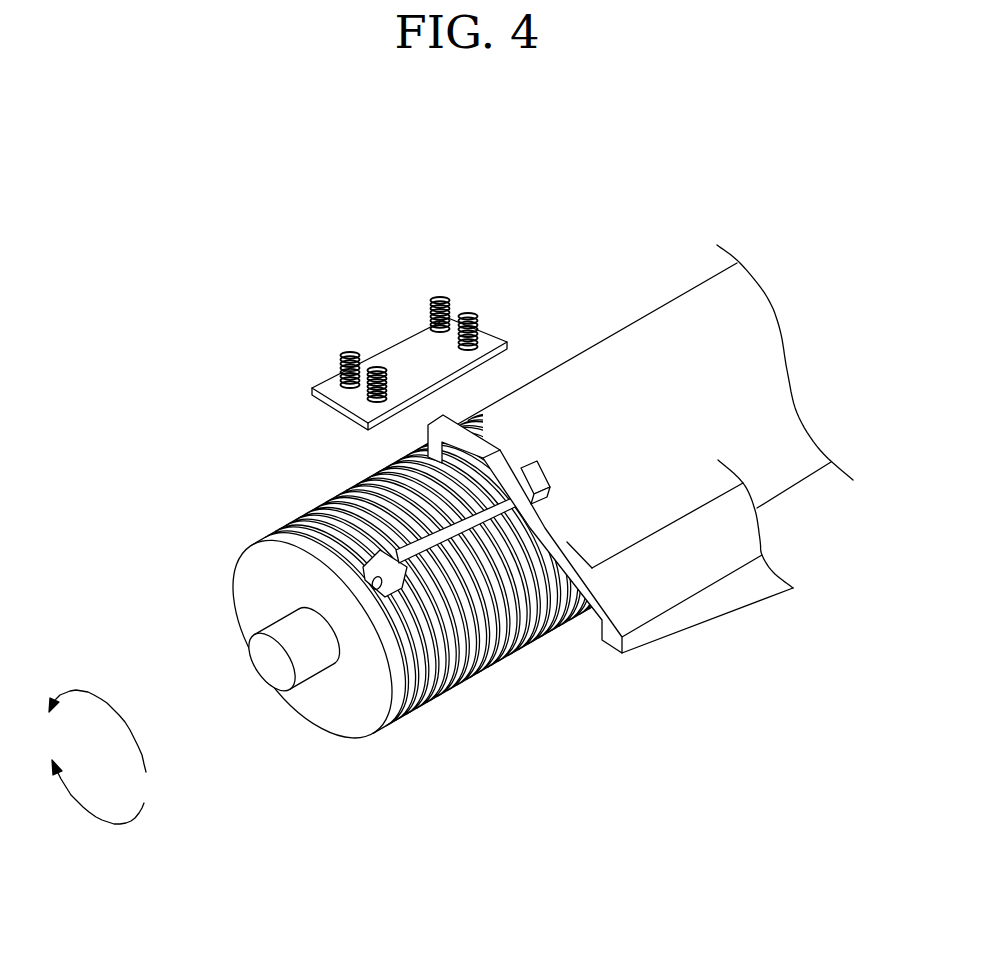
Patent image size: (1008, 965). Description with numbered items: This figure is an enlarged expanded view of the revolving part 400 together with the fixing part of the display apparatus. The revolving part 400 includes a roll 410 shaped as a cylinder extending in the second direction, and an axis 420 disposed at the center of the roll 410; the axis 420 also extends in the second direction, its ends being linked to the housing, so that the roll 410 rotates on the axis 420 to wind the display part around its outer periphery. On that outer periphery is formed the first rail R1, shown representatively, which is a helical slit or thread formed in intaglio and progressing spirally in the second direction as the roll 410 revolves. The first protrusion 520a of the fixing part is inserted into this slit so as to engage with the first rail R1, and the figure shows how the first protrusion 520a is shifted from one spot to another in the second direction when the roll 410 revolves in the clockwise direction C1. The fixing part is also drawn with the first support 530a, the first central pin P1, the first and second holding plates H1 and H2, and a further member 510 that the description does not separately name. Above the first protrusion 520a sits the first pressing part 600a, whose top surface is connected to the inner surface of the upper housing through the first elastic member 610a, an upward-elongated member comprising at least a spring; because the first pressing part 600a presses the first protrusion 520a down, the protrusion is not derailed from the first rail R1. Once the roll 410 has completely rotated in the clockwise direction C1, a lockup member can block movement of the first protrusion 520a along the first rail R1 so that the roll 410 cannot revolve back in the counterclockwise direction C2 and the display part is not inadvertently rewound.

The revolving part 400 is at (359, 589).
The roll 410 is at (385, 589).
The axis 420 is at (250, 653).
The first rail R1 is at (439, 570).
The first holding plate H1 is at (466, 633).
The first central pin P1 is at (504, 596).
The first protrusion 520a is at (475, 534).
The second holding plate H2 is at (545, 397).
The first support 530a is at (597, 421).
The bracket plate 510 is at (655, 449).
The first pressing part 600a is at (397, 346).
The first elastic member 610a is at (382, 346).
The clockwise direction C1 is at (98, 796).
The counterclockwise direction C2 is at (97, 725).